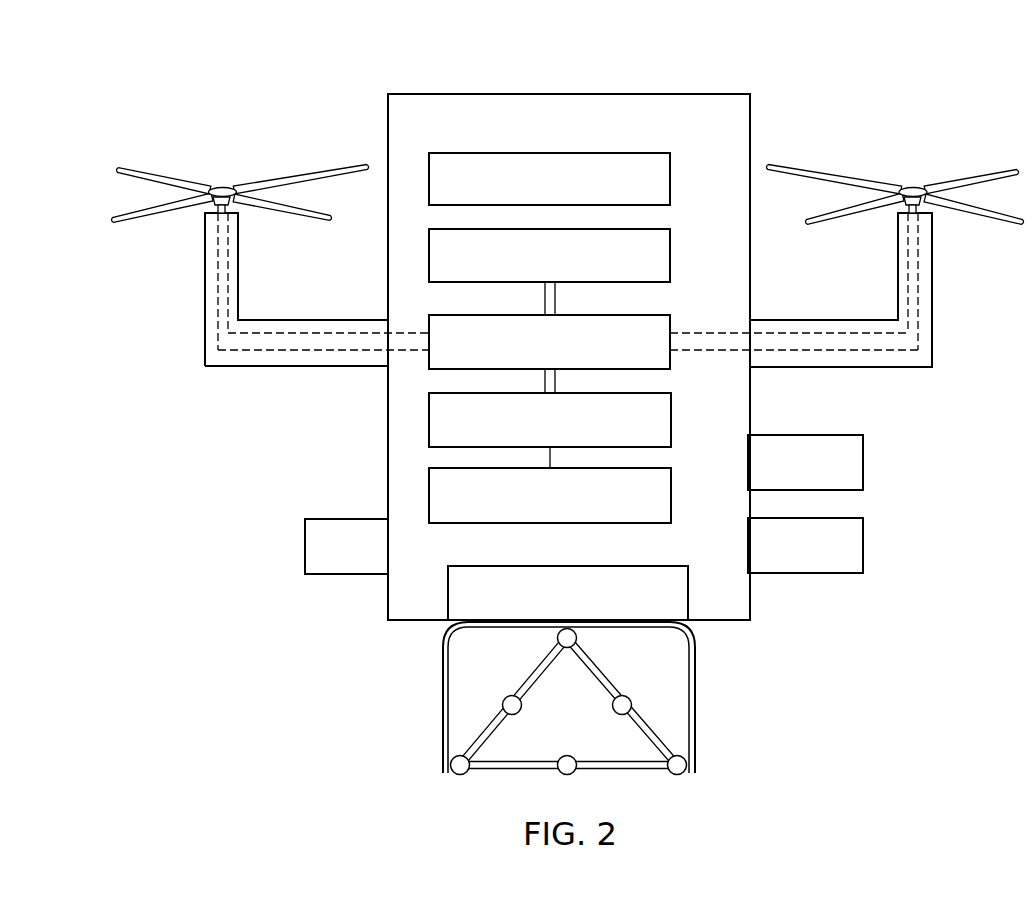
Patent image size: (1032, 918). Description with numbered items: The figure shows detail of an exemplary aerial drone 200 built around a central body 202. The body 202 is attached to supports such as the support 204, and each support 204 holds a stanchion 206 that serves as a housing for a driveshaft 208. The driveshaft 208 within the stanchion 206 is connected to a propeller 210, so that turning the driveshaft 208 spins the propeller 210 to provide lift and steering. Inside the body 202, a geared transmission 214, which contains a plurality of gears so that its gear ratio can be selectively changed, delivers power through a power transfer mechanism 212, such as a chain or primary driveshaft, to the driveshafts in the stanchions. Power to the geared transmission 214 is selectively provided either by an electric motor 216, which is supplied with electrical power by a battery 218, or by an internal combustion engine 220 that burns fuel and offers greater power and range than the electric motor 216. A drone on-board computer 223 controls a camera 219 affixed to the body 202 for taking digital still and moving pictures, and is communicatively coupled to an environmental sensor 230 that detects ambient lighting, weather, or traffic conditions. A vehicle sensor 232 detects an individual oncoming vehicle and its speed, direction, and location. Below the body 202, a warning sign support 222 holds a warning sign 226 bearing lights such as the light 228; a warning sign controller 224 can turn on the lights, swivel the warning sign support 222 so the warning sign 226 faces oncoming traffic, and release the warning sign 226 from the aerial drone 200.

The aerial drone 200 is at (945, 153).
The body 202 is at (590, 148).
The support 204 is at (232, 367).
The stanchion 206 is at (205, 310).
The driveshaft 208 is at (218, 280).
The propeller 210 is at (118, 168).
The power transfer mechanism 212 is at (342, 352).
The geared transmission 214 is at (670, 357).
The electric motor 216 is at (671, 423).
The battery 218 is at (671, 497).
The camera 219 is at (345, 574).
The internal combustion engine 220 is at (670, 258).
The warning sign support 222 is at (695, 672).
The drone on-board computer 223 is at (670, 183).
The warning sign controller 224 is at (688, 600).
The warning sign 226 is at (605, 753).
The light 228 is at (499, 703).
The environmental sensor 230 is at (863, 463).
The vehicle sensor 232 is at (863, 547).